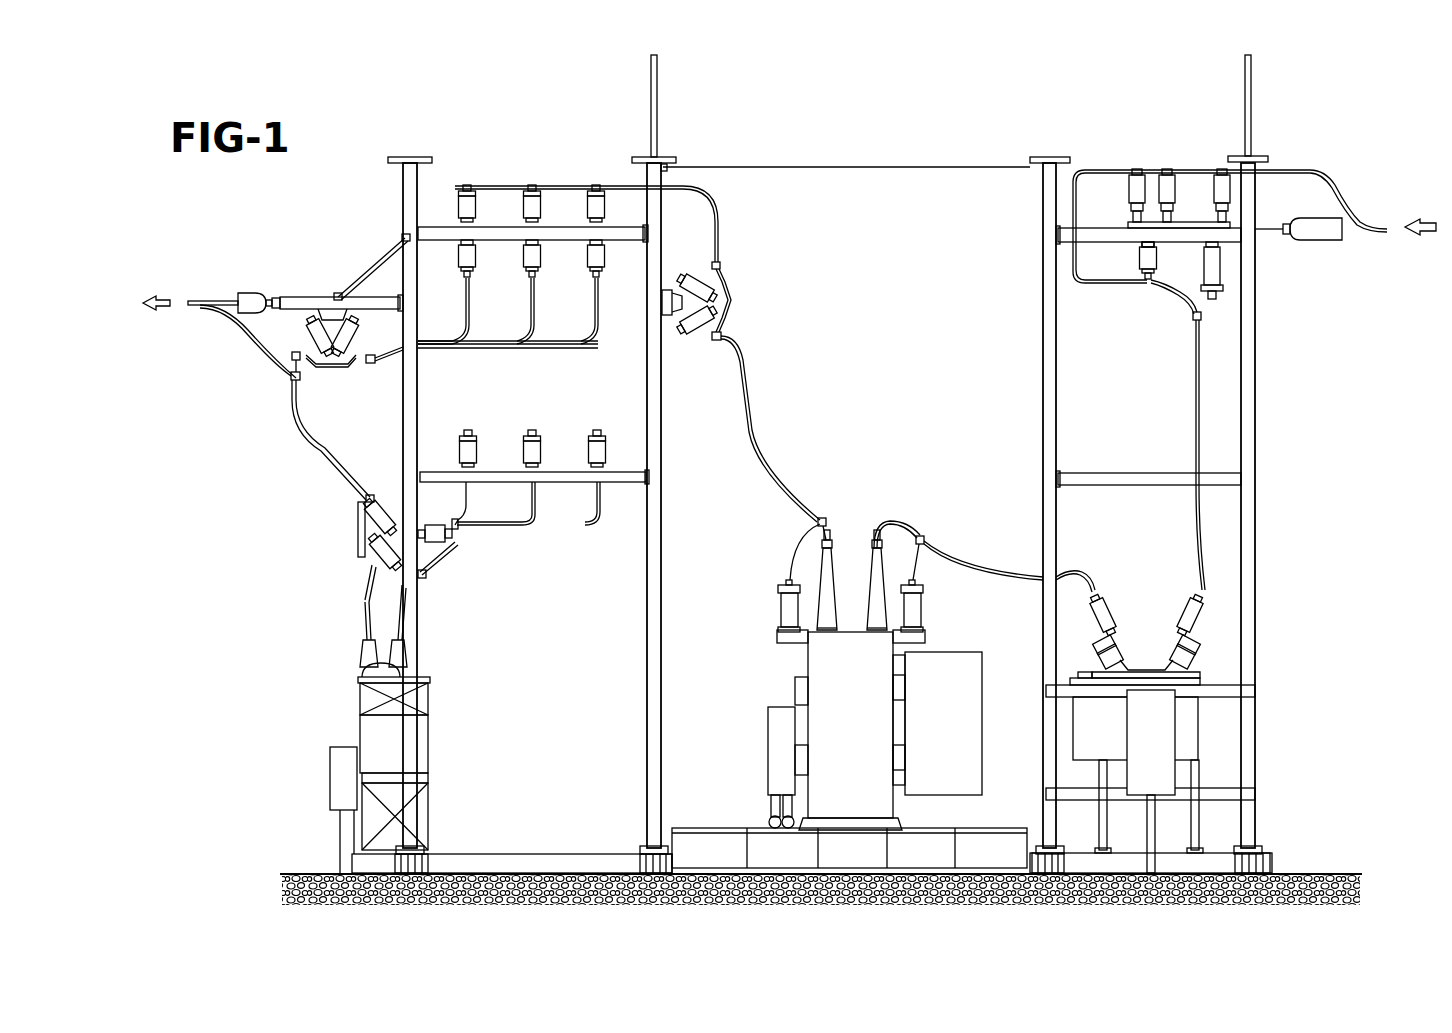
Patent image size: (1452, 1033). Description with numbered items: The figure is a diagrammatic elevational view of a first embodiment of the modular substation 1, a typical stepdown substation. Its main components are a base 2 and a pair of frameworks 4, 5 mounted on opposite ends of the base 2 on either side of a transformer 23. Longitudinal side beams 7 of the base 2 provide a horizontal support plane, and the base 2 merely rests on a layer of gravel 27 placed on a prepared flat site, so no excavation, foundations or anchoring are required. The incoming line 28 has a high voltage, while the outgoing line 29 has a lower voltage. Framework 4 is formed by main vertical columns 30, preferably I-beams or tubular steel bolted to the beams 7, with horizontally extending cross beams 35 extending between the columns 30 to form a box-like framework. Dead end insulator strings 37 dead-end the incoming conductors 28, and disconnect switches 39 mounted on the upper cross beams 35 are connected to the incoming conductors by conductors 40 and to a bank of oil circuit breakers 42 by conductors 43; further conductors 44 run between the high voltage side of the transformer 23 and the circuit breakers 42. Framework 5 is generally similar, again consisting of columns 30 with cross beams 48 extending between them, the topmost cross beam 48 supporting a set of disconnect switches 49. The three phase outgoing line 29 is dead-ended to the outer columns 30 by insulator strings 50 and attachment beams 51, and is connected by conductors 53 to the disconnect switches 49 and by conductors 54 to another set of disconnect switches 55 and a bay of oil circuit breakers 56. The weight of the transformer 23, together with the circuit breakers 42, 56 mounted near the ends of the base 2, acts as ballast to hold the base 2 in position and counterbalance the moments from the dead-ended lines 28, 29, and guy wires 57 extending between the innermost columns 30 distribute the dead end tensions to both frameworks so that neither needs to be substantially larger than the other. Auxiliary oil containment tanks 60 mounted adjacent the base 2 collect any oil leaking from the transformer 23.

The modular substation 1 is at (962, 115).
The base 2 is at (597, 846).
The framework 4 is at (1262, 523).
The framework 5 is at (663, 528).
The longitudinal side beams 7 is at (515, 860).
The transformer 23 is at (830, 668).
The layer of gravel 27 is at (1303, 873).
The incoming line 28 is at (1393, 232).
The outgoing line 29 is at (199, 300).
The main vertical columns 30 is at (407, 407).
The cross beams 35 is at (1112, 235).
The dead end insulator strings 37 is at (1322, 240).
The disconnect switches 39 is at (1146, 170).
The conductors 40 is at (1327, 172).
The oil circuit breakers 42 is at (1200, 730).
The conductors 43 is at (1200, 565).
The conductors 44 is at (995, 577).
The cross beams 48 is at (562, 232).
The disconnect switches 49 is at (472, 186).
The insulator strings 50 is at (252, 295).
The attachment beams 51 is at (312, 297).
The conductors 53 is at (530, 350).
The conductors 54 is at (323, 448).
The disconnect switches 55 is at (357, 524).
The oil circuit breakers 56 is at (357, 697).
The guy wires 57 is at (870, 167).
The auxiliary oil containment tanks 60 is at (718, 848).